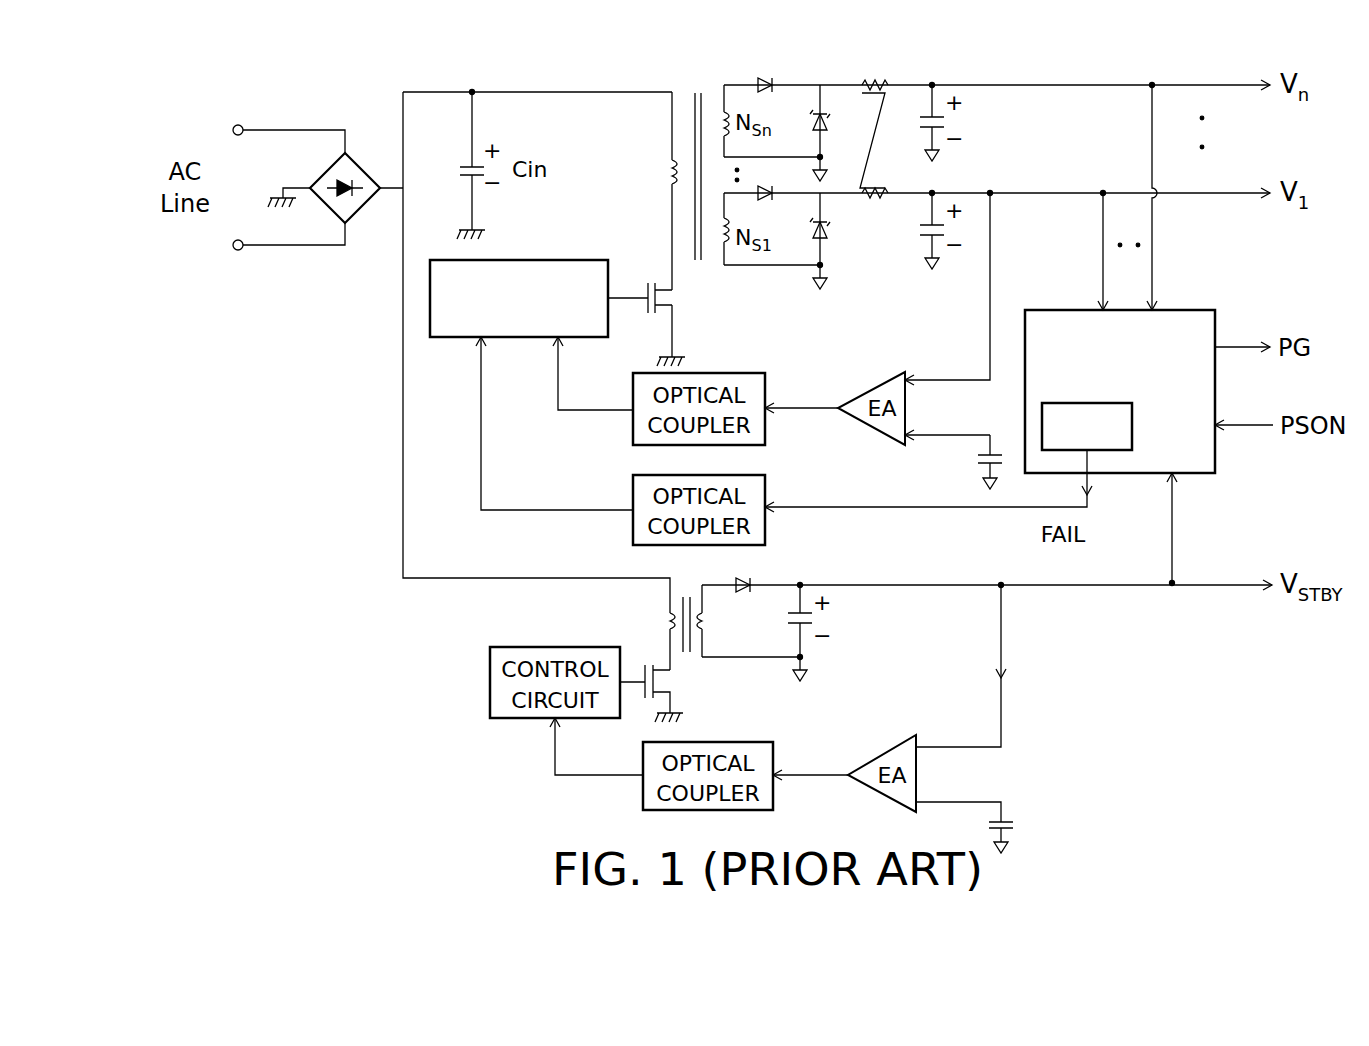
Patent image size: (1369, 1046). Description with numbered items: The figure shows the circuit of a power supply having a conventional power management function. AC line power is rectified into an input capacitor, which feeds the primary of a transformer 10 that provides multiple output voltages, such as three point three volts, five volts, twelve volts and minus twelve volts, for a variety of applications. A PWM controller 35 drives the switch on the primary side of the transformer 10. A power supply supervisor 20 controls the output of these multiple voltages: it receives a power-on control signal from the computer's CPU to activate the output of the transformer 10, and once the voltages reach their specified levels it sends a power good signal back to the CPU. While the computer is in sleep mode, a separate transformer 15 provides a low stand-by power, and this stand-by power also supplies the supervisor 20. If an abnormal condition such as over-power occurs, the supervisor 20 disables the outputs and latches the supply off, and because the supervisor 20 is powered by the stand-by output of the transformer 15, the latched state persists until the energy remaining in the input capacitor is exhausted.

The transformer 10 is at (672, 90).
The PWM controller 35 is at (520, 260).
The power supply supervisor 20 is at (1183, 310).
The transformer 15 is at (690, 592).